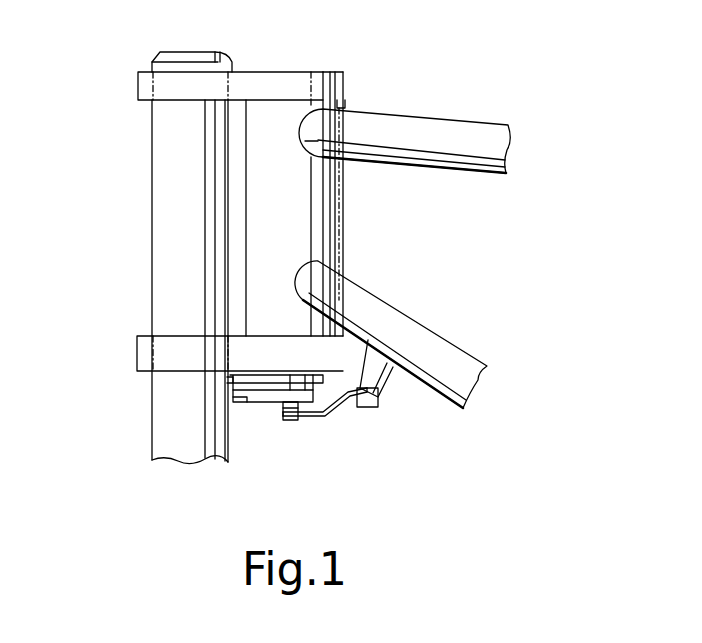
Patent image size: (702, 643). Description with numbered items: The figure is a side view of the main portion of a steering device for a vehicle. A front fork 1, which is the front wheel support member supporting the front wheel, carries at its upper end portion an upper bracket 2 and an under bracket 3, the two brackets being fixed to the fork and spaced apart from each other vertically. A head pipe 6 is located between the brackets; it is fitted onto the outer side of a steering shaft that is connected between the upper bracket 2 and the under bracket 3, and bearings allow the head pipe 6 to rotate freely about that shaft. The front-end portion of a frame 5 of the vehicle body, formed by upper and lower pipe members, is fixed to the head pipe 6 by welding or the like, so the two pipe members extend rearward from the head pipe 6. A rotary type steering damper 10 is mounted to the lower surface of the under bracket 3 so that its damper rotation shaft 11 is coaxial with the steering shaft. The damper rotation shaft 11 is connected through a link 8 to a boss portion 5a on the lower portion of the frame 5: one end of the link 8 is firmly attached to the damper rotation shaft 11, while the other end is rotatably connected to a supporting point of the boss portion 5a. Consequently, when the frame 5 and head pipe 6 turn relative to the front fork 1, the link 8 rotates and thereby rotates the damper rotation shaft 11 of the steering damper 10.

The front fork 1 is at (152, 195).
The upper bracket 2 is at (265, 72).
The under bracket 3 is at (137, 353).
The frame 5 is at (407, 115).
The boss portion 5a is at (395, 387).
The head pipe 6 is at (343, 220).
The link 8 is at (337, 412).
The rotary type steering damper 10 is at (265, 410).
The damper rotation shaft 11 is at (293, 420).